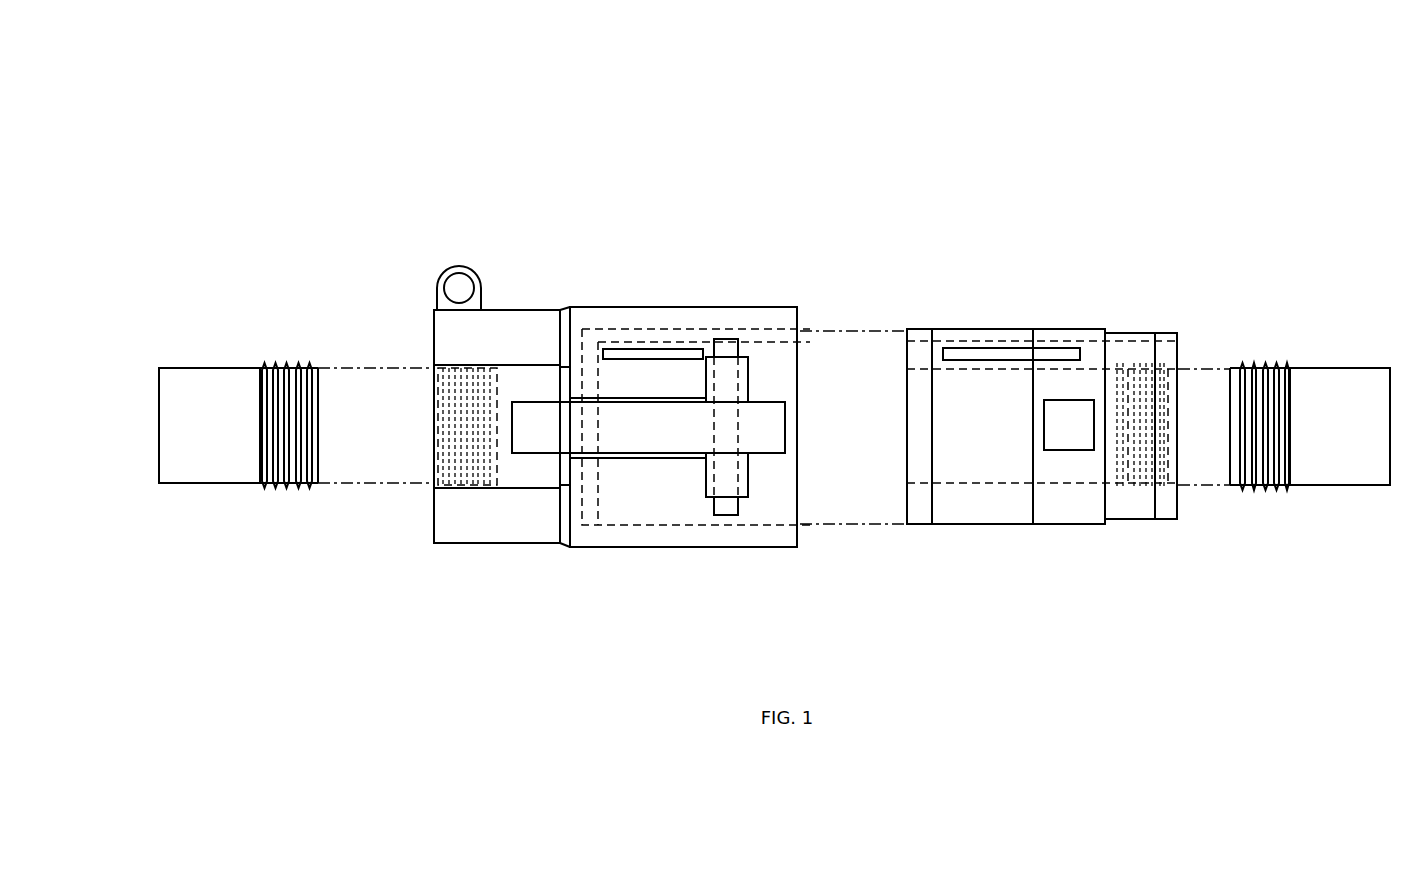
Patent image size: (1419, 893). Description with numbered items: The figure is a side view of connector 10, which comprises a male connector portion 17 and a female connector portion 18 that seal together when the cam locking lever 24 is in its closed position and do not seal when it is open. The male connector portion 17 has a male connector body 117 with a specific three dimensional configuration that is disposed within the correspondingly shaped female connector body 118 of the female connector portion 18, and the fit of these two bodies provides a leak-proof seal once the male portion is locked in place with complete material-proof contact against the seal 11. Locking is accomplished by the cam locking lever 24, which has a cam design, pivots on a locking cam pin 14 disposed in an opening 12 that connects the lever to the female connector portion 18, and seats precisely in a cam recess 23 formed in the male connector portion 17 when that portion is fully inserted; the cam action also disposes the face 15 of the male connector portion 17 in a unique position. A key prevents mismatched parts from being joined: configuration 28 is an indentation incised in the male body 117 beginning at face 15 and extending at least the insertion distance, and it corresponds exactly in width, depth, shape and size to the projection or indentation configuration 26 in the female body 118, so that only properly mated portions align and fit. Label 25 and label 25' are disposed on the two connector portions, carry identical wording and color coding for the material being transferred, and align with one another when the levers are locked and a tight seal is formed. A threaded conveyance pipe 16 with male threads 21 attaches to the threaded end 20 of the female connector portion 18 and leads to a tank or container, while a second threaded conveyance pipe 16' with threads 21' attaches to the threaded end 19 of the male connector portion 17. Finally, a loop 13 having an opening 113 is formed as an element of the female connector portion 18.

The connector 10 is at (1040, 135).
The seal 11 is at (586, 522).
The opening 12 is at (745, 383).
The loop 13 is at (463, 267).
The locking cam pin 14 is at (735, 350).
The face 15 is at (907, 440).
The threaded conveyance pipe 16 is at (208, 473).
The threaded conveyance pipe 16' is at (1331, 472).
The male connector portion 17 is at (1122, 272).
The female connector portion 18 is at (620, 275).
The threaded end 19 is at (1178, 377).
The threaded end 20 is at (434, 395).
The threads 21 is at (350, 497).
The threads 21' is at (1232, 497).
The cam recess 23 is at (1069, 428).
The cam locking lever 24 is at (646, 433).
The label 25 is at (660, 243).
The label 25' is at (1025, 273).
The configuration 26 is at (672, 335).
The configuration 28 is at (948, 335).
The opening 113 is at (460, 288).
The male connector body 117 is at (975, 525).
The female connector body 118 is at (642, 549).